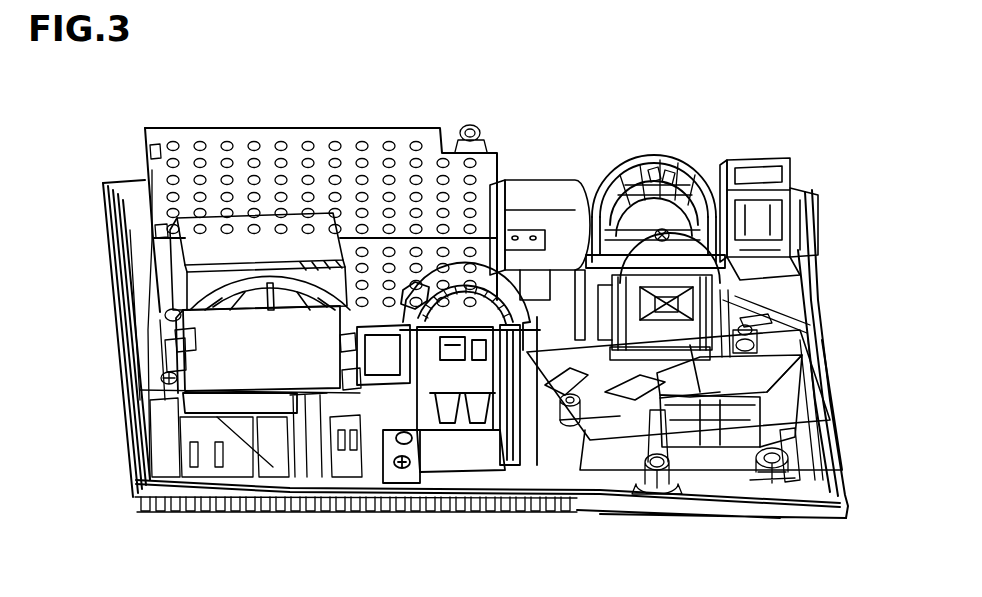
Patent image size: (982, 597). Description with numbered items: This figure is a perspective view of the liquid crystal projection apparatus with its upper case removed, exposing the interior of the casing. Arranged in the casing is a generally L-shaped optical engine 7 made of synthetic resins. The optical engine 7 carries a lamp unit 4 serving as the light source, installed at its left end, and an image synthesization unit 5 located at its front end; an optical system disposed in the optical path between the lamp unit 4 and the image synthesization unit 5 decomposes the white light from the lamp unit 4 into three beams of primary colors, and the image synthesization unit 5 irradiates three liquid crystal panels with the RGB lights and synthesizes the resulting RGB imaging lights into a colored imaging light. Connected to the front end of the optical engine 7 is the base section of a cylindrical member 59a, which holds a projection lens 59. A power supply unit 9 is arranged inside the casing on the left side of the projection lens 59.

The lamp unit 4 is at (292, 375).
The image synthesization unit 5 is at (820, 295).
The optical engine 7 is at (603, 420).
The power supply unit 9 is at (188, 135).
The projection lens 59 is at (610, 172).
The cylindrical member 59a is at (704, 190).